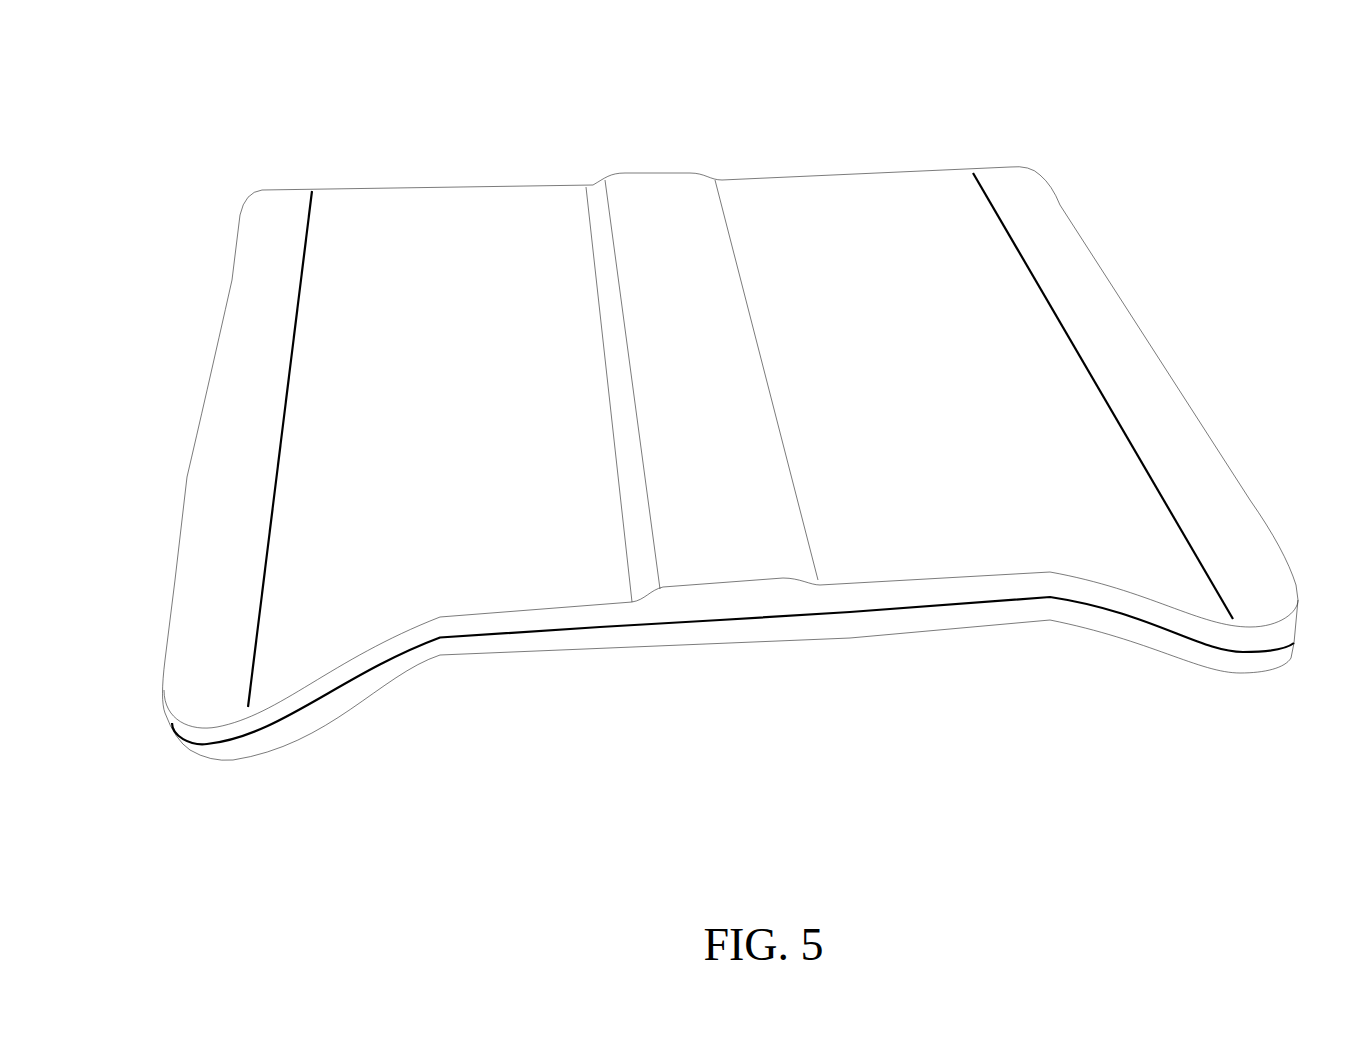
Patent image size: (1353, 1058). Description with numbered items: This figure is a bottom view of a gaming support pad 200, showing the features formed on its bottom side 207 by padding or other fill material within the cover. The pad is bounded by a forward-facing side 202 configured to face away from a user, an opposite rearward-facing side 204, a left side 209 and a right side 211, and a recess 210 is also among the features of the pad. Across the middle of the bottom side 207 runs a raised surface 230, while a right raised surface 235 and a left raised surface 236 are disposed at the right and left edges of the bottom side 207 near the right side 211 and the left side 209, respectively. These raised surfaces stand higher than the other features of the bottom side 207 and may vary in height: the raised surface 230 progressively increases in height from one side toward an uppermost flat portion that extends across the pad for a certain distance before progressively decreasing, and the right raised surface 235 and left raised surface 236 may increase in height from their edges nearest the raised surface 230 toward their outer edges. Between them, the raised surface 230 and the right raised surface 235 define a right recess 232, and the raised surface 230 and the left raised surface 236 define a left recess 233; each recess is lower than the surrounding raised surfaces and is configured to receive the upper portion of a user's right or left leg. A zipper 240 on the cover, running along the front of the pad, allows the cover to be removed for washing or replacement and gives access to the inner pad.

The gaming support pad 200 is at (700, 449).
The forward-facing side 202 is at (665, 330).
The rearward-facing side 204 is at (967, 790).
The bottom side 207 is at (431, 411).
The left side 209 is at (1032, 393).
The recess 210 is at (689, 715).
The right side 211 is at (128, 435).
The raised surface 230 is at (683, 420).
The right recess 232 is at (370, 402).
The left recess 233 is at (956, 406).
The right raised surface 235 is at (230, 436).
The left raised surface 236 is at (1110, 384).
The zipper 240 is at (567, 628).